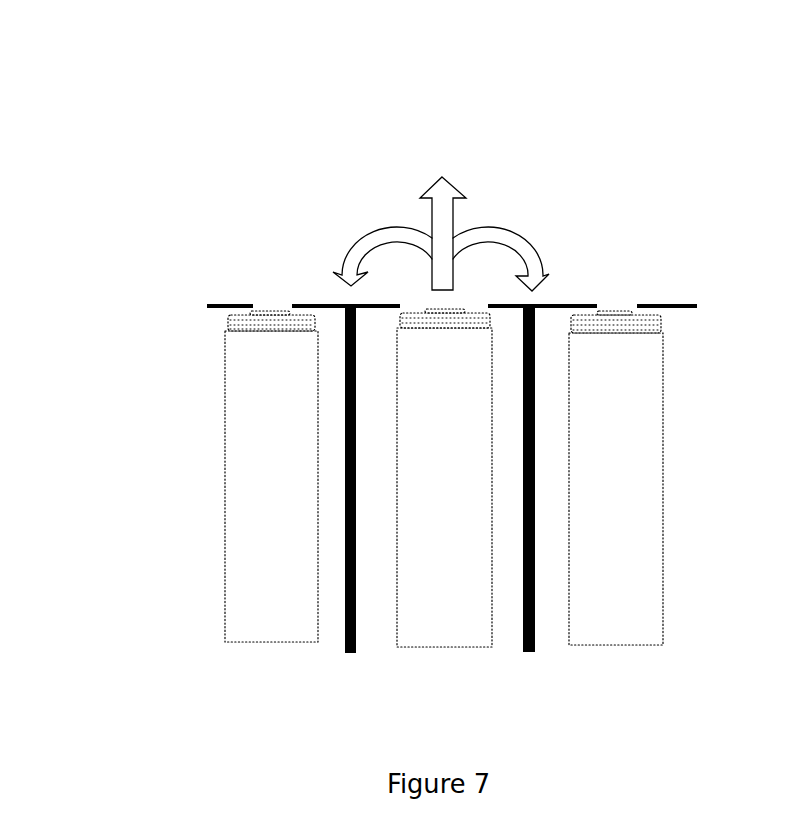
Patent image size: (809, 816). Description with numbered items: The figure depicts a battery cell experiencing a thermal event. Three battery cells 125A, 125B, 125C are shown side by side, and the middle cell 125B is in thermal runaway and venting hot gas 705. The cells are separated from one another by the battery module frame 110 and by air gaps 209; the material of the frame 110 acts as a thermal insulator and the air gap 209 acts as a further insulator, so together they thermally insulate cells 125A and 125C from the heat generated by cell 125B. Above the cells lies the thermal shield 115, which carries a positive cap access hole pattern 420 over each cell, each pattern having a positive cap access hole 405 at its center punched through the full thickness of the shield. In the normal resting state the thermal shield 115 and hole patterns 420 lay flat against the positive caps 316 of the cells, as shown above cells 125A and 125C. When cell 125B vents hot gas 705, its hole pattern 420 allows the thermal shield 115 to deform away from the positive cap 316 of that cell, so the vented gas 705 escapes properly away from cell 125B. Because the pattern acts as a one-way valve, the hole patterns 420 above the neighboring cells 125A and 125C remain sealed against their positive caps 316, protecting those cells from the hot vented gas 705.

The hot gas 705 is at (442, 177).
The positive cap access hole pattern 420 is at (400, 307).
The positive cap access hole 405 is at (462, 298).
The positive cap 316 is at (622, 307).
The thermal shield 115 is at (207, 305).
The battery module frame 110 is at (345, 467).
The air gap 209 is at (557, 417).
The battery cell 125A is at (272, 612).
The battery cell 125B is at (445, 613).
The battery cell 125C is at (625, 613).